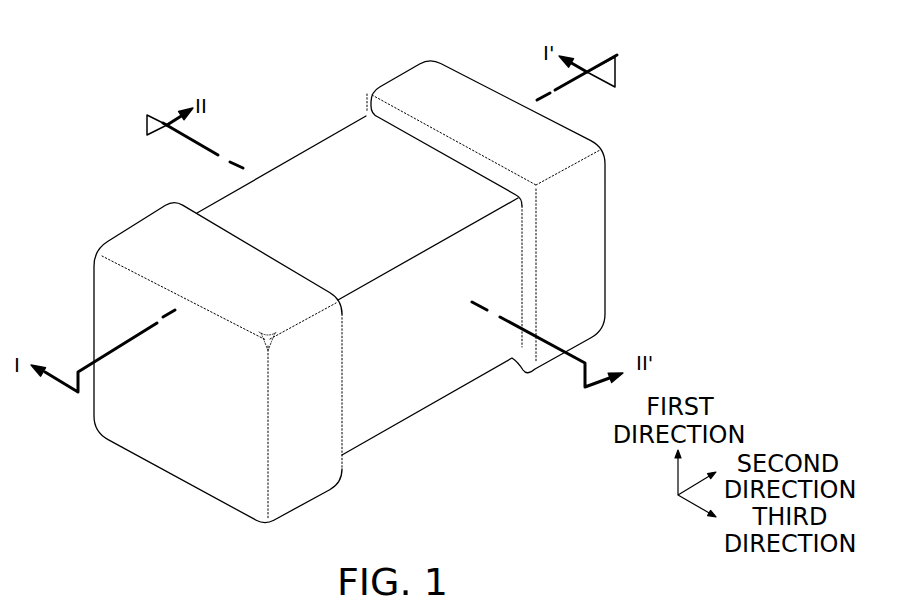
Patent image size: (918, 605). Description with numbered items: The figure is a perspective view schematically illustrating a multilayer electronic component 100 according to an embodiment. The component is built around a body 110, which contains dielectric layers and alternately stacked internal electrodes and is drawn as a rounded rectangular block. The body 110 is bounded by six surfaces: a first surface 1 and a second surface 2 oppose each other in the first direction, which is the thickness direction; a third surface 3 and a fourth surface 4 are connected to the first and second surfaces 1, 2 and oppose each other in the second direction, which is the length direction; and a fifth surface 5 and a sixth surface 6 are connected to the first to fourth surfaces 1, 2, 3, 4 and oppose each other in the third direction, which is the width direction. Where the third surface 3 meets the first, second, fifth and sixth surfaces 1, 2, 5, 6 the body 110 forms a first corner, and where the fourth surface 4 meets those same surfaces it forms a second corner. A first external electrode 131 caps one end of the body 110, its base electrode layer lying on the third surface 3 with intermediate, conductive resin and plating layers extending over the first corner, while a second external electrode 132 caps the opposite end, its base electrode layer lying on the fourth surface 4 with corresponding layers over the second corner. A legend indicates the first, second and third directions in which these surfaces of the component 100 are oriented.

The multilayer electronic component 100 is at (139, 27).
The body 110 is at (233, 220).
The first external electrode 131 is at (147, 238).
The second external electrode 132 is at (413, 88).
The first surface 1 is at (356, 155).
The second surface 2 is at (376, 406).
The third surface 3 is at (182, 437).
The fourth surface 4 is at (564, 232).
The fifth surface 5 is at (336, 178).
The sixth surface 6 is at (424, 380).